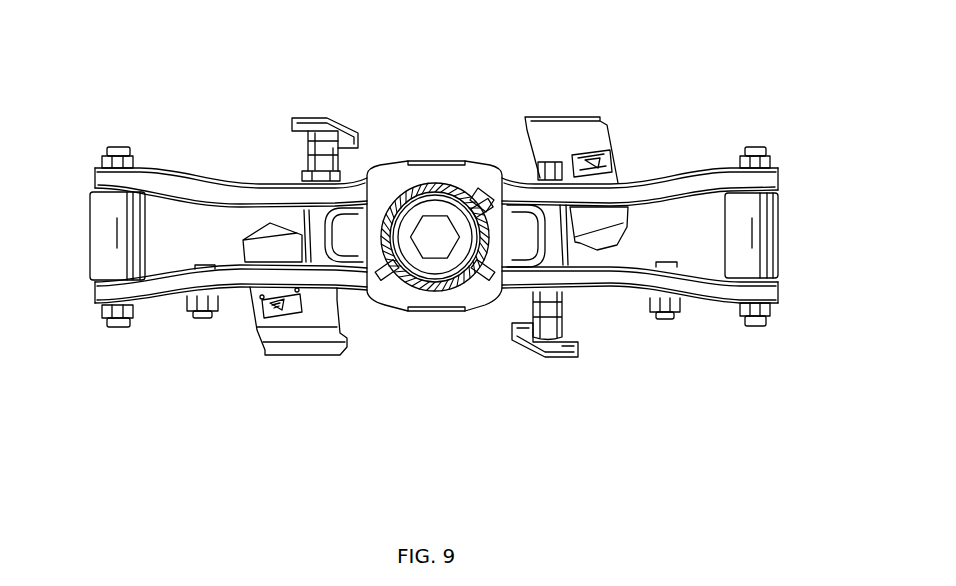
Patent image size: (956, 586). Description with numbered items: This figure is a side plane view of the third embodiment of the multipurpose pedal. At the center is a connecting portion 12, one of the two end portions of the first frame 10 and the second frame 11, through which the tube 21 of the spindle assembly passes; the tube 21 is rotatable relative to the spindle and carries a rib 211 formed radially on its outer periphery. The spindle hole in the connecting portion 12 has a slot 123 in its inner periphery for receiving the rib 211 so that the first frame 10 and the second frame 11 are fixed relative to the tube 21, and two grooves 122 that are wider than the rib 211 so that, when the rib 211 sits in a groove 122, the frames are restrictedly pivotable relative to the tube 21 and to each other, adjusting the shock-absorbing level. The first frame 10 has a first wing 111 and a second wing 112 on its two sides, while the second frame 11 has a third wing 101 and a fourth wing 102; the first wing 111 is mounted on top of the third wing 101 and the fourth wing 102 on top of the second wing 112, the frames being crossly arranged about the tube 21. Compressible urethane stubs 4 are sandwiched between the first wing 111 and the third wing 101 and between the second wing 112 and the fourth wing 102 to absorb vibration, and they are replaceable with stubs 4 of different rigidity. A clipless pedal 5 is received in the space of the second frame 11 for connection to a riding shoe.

The stub 4 is at (745, 237).
The clipless pedal 5 is at (573, 117).
The first frame 10 is at (436, 331).
The second frame 11 is at (436, 159).
The connecting portion 12 is at (402, 178).
The tube 21 is at (427, 182).
The third wing 101 is at (233, 282).
The fourth wing 102 is at (662, 192).
The first wing 111 is at (213, 192).
The second wing 112 is at (708, 288).
The groove 122 is at (383, 270).
The slot 123 is at (490, 203).
The rib 211 is at (489, 205).